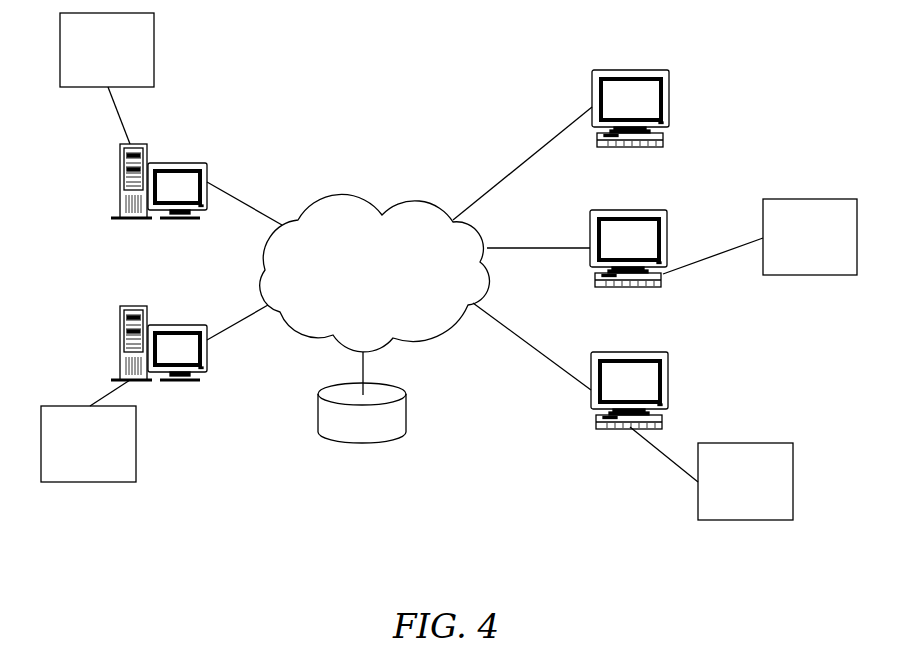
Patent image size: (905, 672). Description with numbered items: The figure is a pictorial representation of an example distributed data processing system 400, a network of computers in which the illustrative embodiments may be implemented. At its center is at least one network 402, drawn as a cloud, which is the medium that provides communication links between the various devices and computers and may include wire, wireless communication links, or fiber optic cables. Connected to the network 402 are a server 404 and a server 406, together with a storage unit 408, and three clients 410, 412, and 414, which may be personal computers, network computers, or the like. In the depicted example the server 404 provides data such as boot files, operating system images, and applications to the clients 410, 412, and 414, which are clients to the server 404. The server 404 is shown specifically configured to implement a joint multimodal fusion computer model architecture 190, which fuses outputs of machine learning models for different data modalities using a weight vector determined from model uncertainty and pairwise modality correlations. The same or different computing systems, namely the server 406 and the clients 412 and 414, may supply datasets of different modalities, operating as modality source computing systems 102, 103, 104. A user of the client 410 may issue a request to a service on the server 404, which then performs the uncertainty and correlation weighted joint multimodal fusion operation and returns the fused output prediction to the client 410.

The distributed data processing system 400 is at (448, 115).
The network 402 is at (352, 197).
The server 404 is at (120, 183).
The server 406 is at (120, 344).
The storage unit 408 is at (318, 410).
The client 410 is at (668, 108).
The client 412 is at (667, 248).
The client 414 is at (667, 390).
The joint multimodal fusion computer model architecture 190 is at (92, 61).
The modality source computing system 102 is at (73, 451).
The modality source computing system 103 is at (795, 248).
The modality source computing system 104 is at (730, 493).